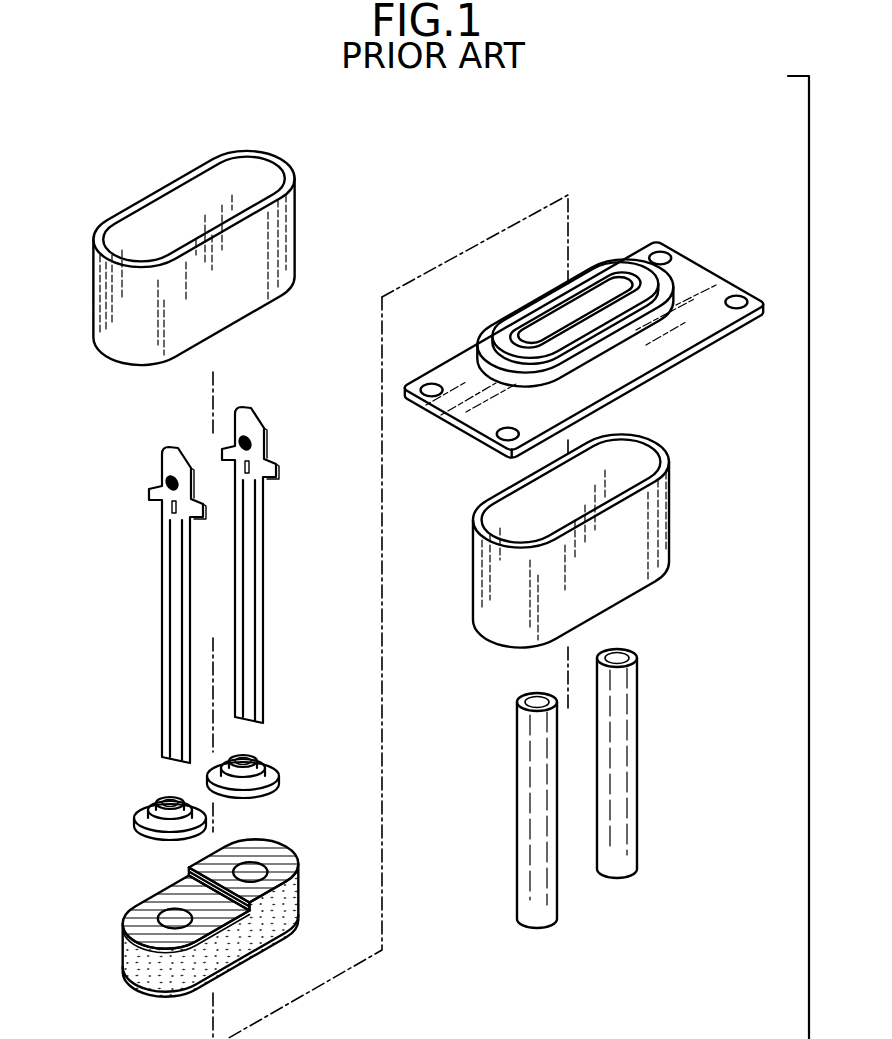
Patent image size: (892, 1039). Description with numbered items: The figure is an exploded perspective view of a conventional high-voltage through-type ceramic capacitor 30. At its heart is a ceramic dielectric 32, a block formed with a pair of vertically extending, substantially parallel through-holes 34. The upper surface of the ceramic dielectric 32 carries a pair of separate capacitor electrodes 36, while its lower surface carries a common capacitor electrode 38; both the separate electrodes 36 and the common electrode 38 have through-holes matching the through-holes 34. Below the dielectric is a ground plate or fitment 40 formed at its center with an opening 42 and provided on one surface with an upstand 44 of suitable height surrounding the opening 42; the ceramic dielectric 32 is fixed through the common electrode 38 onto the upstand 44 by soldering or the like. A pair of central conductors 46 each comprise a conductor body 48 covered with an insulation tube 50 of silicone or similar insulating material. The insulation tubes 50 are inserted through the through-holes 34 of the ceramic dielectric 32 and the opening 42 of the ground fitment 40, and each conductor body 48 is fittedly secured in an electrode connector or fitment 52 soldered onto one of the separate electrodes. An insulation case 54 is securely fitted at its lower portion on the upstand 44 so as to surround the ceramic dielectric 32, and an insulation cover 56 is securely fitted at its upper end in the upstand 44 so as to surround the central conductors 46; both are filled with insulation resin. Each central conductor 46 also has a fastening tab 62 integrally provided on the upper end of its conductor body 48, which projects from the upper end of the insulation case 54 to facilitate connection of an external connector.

The high-voltage through-type ceramic capacitor 30 is at (332, 176).
The ceramic dielectric 32 is at (211, 899).
The through-holes 34 is at (170, 910).
The capacitor electrodes 36 is at (142, 910).
The common capacitor electrode 38 is at (247, 967).
The ground plate or fitment 40 is at (585, 328).
The opening 42 is at (546, 333).
The upstand 44 is at (660, 288).
The central conductors 46 is at (203, 585).
The conductor body 48 is at (162, 683).
The insulation tube 50 is at (519, 784).
The electrode connector or fitment 52 is at (143, 812).
The insulation case 54 is at (262, 300).
The insulation cover 56 is at (667, 533).
The fastening tab 62 is at (160, 468).